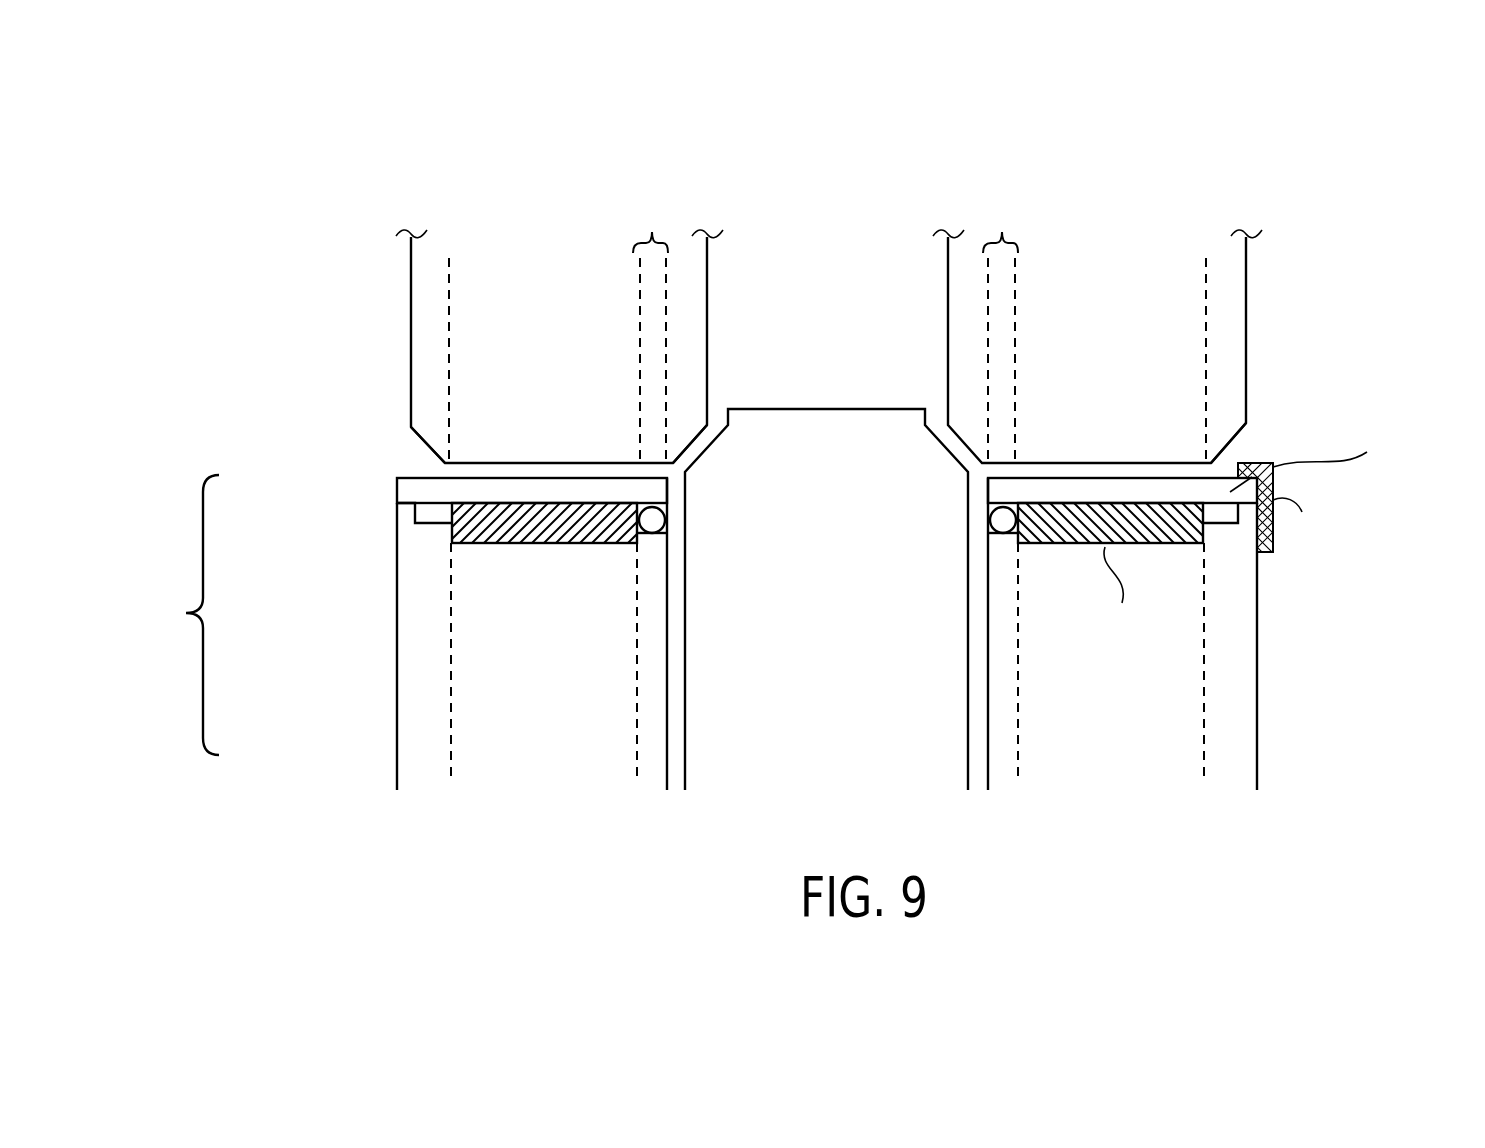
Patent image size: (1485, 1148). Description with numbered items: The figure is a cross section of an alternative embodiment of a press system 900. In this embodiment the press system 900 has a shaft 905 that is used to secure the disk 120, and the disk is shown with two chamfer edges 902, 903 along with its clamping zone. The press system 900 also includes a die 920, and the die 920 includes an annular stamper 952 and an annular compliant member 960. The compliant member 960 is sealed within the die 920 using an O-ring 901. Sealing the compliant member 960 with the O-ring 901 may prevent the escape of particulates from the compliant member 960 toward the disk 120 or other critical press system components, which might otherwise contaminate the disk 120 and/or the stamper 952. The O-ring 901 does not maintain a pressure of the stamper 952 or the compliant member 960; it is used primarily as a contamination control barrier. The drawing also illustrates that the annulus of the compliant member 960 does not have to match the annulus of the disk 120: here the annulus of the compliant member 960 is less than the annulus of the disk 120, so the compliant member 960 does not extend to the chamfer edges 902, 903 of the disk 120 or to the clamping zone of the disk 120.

The press system 900 is at (1264, 148).
The disk 120 is at (1089, 404).
The O-ring 901 is at (665, 517).
The chamfer edge 902 is at (1306, 377).
The chamfer edge 903 is at (689, 434).
The shaft 905 is at (794, 740).
The die 920 is at (800, 603).
The annular stamper 952 is at (409, 489).
The compliant member 960 is at (547, 547).